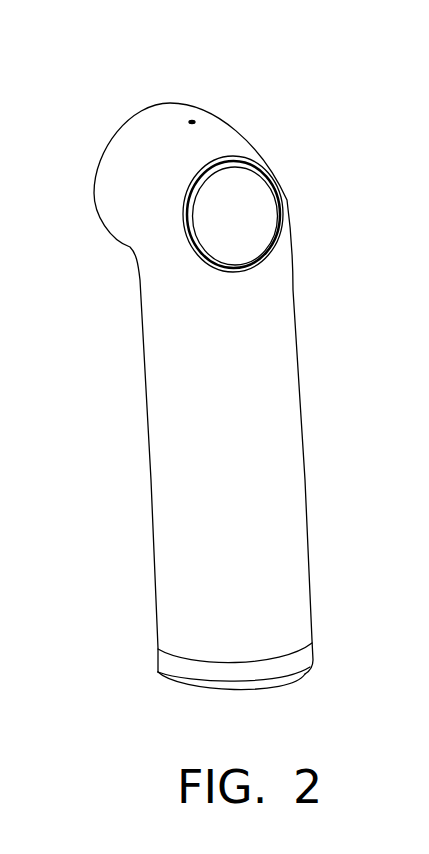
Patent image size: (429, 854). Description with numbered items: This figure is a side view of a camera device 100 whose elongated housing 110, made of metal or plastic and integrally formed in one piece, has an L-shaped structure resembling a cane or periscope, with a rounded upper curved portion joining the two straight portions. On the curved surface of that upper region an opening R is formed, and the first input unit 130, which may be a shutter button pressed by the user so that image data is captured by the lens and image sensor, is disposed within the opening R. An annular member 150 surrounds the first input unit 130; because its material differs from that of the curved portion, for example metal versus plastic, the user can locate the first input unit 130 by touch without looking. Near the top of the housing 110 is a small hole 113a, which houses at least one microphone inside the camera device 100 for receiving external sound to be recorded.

The camera device 100 is at (268, 118).
The housing 110 is at (275, 460).
The hole 113a is at (192, 121).
The first input unit 130 is at (259, 212).
The annular member 150 is at (238, 162).
The opening R is at (240, 263).